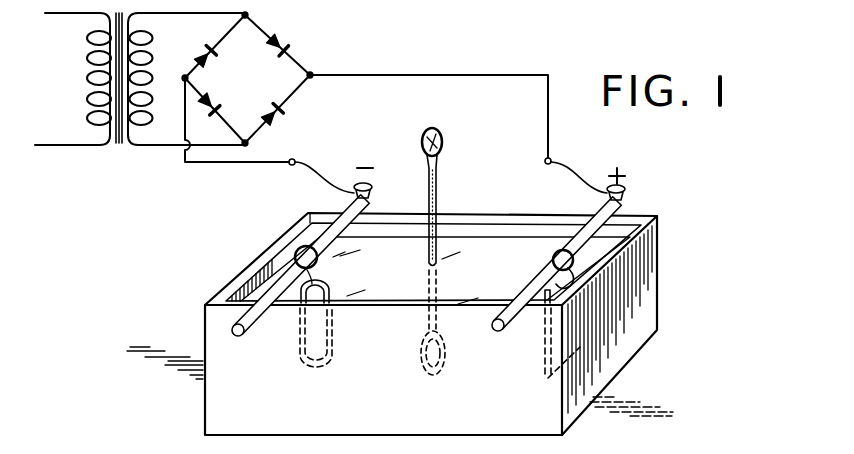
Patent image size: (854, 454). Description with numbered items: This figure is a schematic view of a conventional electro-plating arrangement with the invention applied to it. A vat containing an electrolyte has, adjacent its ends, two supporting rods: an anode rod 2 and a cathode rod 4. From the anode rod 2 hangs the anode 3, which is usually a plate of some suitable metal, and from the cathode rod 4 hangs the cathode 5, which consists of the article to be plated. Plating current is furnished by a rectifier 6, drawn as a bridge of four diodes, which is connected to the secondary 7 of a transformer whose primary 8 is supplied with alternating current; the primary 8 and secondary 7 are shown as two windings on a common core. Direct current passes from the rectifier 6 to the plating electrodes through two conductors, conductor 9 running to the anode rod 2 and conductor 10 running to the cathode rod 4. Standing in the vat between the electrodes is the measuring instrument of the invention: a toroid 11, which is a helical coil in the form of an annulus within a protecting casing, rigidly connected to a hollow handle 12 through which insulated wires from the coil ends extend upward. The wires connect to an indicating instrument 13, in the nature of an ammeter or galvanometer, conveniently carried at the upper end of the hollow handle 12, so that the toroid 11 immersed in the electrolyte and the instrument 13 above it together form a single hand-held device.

The anode rod 2 is at (510, 324).
The anode 3 is at (578, 266).
The cathode rod 4 is at (249, 324).
The cathode 5 is at (332, 288).
The rectifier 6 is at (254, 89).
The secondary 7 is at (142, 70).
The primary 8 is at (93, 68).
The conductor 9 is at (485, 73).
The conductor 10 is at (249, 163).
The toroid 11 is at (430, 352).
The hollow handle 12 is at (437, 200).
The indicating instrument 13 is at (440, 133).